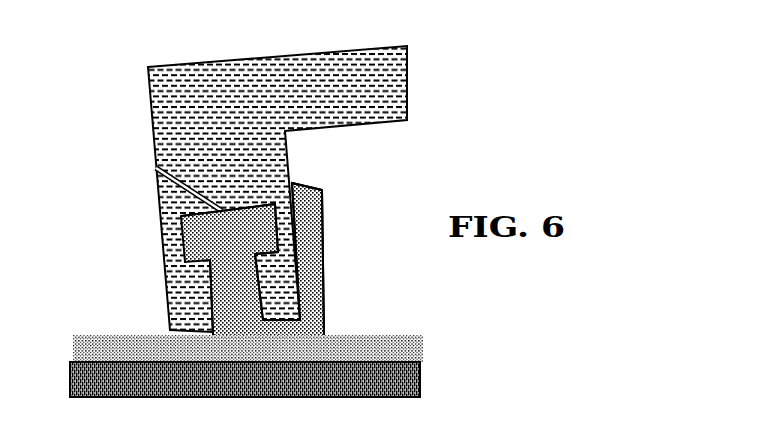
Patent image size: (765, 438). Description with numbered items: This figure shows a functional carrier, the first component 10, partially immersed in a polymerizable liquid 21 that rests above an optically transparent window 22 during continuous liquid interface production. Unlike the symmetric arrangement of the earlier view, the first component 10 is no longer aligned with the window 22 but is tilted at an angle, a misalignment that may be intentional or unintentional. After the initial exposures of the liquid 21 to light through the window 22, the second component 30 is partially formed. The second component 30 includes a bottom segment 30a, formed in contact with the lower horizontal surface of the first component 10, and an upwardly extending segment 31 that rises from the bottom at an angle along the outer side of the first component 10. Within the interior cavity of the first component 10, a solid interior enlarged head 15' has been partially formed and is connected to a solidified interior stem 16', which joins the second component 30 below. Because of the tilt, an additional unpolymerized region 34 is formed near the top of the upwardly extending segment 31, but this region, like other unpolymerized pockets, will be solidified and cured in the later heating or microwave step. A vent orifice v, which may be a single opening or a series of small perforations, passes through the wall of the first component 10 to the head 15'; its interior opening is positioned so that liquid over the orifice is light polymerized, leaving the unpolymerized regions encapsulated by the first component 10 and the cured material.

The first component 10 is at (277, 189).
The vent orifice v is at (156, 168).
The solid interior enlarged head 15' is at (229, 229).
The solidified interior stem 16' is at (236, 294).
The second component 30 is at (338, 264).
The bottom segment 30a is at (303, 322).
The upwardly extending segment 31 is at (323, 220).
The unpolymerized region 34 is at (298, 181).
The polymerizable liquid 21 is at (248, 348).
The optically transparent window 22 is at (245, 379).